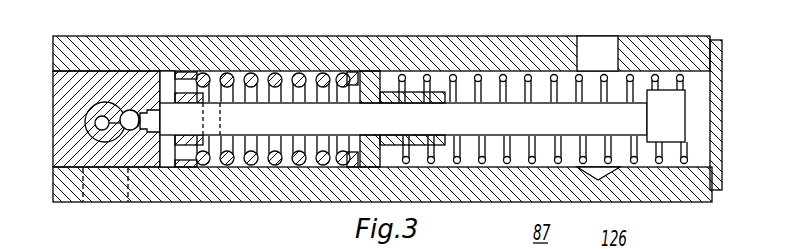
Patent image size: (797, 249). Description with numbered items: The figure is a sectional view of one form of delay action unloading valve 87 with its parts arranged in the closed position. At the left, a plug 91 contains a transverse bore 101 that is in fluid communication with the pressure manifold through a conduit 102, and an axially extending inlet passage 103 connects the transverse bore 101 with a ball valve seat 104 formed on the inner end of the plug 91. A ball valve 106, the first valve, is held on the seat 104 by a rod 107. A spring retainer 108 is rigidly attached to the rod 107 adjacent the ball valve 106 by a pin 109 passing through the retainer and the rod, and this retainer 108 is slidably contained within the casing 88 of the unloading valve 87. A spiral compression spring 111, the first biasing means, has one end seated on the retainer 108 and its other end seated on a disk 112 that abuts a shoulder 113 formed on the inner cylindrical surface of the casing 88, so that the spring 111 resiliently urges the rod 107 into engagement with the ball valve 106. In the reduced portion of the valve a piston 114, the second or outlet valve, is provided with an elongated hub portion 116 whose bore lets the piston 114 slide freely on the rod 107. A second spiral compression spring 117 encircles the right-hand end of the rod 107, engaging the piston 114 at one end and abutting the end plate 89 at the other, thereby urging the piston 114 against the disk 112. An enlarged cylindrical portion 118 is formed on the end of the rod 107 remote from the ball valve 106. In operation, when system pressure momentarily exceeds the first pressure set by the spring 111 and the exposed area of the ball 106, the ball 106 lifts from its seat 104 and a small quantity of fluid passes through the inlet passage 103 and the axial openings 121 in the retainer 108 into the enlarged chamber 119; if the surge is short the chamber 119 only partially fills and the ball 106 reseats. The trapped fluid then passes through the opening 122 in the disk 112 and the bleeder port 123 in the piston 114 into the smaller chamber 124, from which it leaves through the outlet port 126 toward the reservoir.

The unloading valve 87 is at (512, 36).
The casing 88 is at (278, 190).
The end plate 89 is at (722, 118).
The plug 91 is at (53, 124).
The transverse bore 101 is at (101, 109).
The conduit 102 is at (128, 203).
The inlet passage 103 is at (113, 130).
The ball valve seat 104 is at (131, 131).
The ball valve 106 is at (129, 108).
The rod 107 is at (331, 128).
The spring retainer 108 is at (189, 163).
The pin 109 is at (210, 93).
The spiral compression spring 111 is at (229, 160).
The disk 112 is at (356, 166).
The shoulder 113 is at (382, 150).
The piston 114 is at (368, 90).
The elongated hub portion 116 is at (416, 88).
The second spiral compression spring 117 is at (503, 163).
The enlarged cylindrical portion 118 is at (673, 133).
The enlarged chamber 119 is at (266, 74).
The axial openings 121 is at (187, 75).
The opening 122 is at (353, 86).
The bleeder port 123 is at (363, 97).
The smaller chamber 124 is at (543, 164).
The outlet port 126 is at (617, 45).